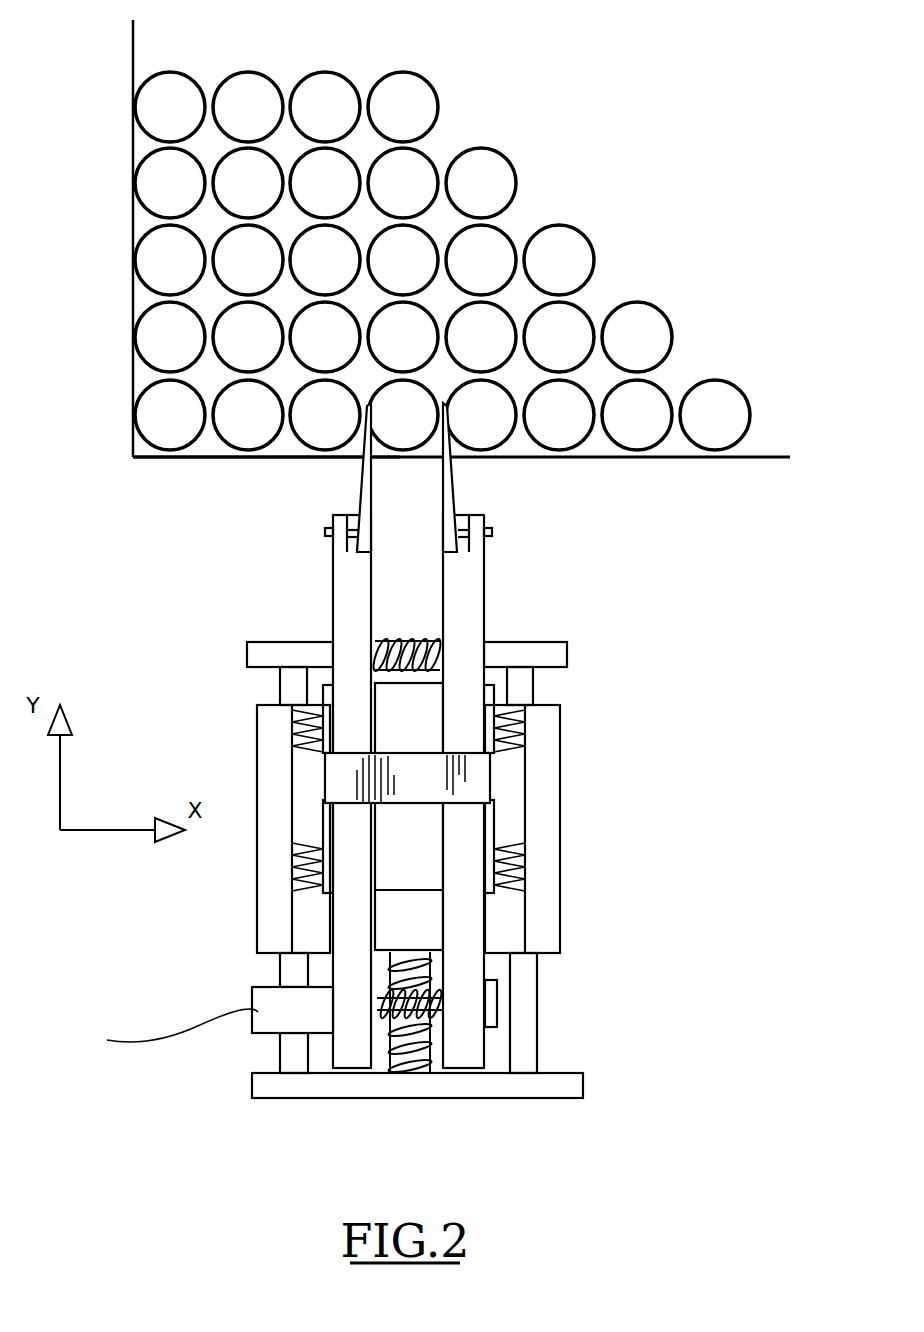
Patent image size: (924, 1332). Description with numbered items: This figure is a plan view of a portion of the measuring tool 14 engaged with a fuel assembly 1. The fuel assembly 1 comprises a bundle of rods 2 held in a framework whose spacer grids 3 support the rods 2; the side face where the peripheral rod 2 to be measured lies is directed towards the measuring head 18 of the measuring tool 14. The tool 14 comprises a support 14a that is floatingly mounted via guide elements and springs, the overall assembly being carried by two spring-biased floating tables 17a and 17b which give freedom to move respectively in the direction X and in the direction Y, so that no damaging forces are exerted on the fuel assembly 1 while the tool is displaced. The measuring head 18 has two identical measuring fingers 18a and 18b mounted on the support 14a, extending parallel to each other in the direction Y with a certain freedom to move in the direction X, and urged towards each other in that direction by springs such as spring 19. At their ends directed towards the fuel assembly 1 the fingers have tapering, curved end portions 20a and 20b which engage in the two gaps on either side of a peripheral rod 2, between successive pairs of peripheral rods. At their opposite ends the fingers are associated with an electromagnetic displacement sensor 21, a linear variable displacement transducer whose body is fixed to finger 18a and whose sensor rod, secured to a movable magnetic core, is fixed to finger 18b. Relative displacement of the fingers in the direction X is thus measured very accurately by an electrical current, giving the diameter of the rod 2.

The fuel assembly 1 is at (664, 470).
The rods 2 is at (505, 237).
The spacer grids 3 is at (198, 462).
The measuring tool 14 is at (176, 916).
The support 14a is at (415, 762).
The floating table 17a is at (488, 848).
The floating table 17b is at (513, 920).
The measuring head 18 is at (292, 581).
The measuring finger 18a is at (348, 942).
The measuring finger 18b is at (472, 978).
The spring 19 is at (407, 636).
The tapering end portion 20a is at (366, 506).
The tapering end portion 20b is at (454, 506).
The electromagnetic displacement sensor 21 is at (258, 1030).